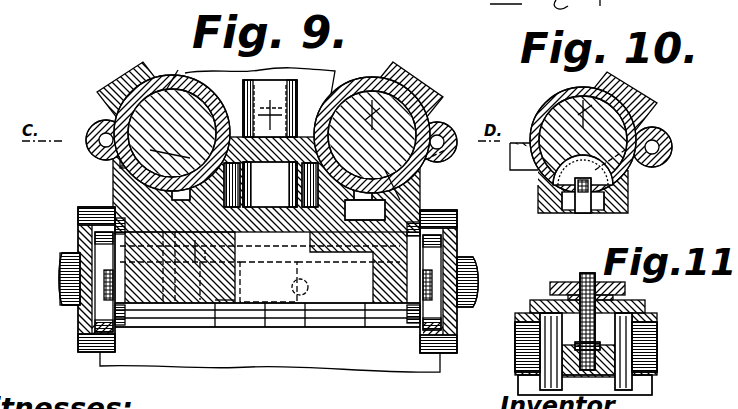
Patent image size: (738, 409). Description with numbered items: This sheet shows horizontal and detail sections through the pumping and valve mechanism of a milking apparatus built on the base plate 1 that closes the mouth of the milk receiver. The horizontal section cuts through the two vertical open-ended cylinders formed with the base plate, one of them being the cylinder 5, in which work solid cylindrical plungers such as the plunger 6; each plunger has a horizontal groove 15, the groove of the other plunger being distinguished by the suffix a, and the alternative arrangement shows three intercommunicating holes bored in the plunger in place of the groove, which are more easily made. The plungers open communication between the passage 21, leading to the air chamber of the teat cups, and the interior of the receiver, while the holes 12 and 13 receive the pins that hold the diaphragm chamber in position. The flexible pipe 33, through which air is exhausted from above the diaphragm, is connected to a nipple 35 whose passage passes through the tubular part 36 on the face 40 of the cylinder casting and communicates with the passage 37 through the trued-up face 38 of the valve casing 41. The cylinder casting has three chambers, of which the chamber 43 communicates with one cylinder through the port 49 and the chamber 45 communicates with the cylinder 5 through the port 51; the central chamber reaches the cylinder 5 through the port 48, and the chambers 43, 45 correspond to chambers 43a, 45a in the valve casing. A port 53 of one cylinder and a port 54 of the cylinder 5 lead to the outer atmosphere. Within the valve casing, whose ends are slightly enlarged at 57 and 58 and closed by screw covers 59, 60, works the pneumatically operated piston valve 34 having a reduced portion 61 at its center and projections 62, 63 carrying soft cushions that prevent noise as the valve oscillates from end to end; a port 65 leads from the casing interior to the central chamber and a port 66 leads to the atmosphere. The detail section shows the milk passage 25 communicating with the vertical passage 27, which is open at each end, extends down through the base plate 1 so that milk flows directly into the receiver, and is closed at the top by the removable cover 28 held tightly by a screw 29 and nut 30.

In FIG. 9, the base plate 1 is at (369, 230).
In FIG. 9, the cylinder 5 is at (362, 92).
In FIG. 10, the cylinder 5 is at (553, 102).
In FIG. 9, the plunger 6 is at (369, 230).
In FIG. 9, the bearing a is at (172, 72).
In FIG. 9, the hole 12 is at (100, 142).
In FIG. 9, the hole 13 is at (440, 140).
In FIG. 10, the hole 13 is at (660, 147).
In FIG. 9, the horizontal groove 15 is at (275, 151).
In FIG. 9, the passage 21 is at (130, 86).
In FIG. 10, the passage 21 is at (640, 102).
In FIG. 11, the milk passage 25 is at (645, 348).
In FIG. 11, the vertical passage 27 is at (640, 388).
In FIG. 11, the removable cover 28 is at (532, 304).
In FIG. 11, the screw 29 is at (586, 275).
In FIG. 11, the nut 30 is at (556, 290).
In FIG. 9, the flexible pipe 33 is at (265, 95).
In FIG. 9, the controlling valve 34 is at (215, 318).
In FIG. 9, the nipple 35 is at (292, 112).
In FIG. 9, the tubular part 36 is at (270, 184).
In FIG. 9, the passage 37 is at (260, 268).
In FIG. 9, the valve casing face 38 is at (80, 215).
In FIG. 9, the face of the cylinder casting 40 is at (400, 200).
In FIG. 10, the face of the cylinder casting 40 is at (620, 212).
In FIG. 9, the valve casing 41 is at (252, 328).
In FIG. 9, the chamber 43 is at (212, 212).
In FIG. 9, the chamber 43a is at (228, 306).
In FIG. 9, the chamber 45 is at (355, 218).
In FIG. 10, the chamber 45 is at (575, 207).
In FIG. 9, the chamber 45a is at (303, 292).
In FIG. 9, the port 48 is at (360, 124).
In FIG. 10, the port 48 is at (548, 182).
In FIG. 9, the port 49 is at (121, 170).
In FIG. 9, the port 51 is at (346, 192).
In FIG. 10, the port 51 is at (545, 202).
In FIG. 9, the port 53 is at (122, 167).
In FIG. 9, the port 54 is at (432, 165).
In FIG. 10, the port 54 is at (605, 175).
In FIG. 9, the enlarged end 57 is at (103, 296).
In FIG. 9, the enlarged end 58 is at (432, 312).
In FIG. 9, the screw cover 59 is at (88, 326).
In FIG. 9, the screw cover 60 is at (440, 332).
In FIG. 9, the reduced portion 61 is at (268, 318).
In FIG. 9, the projection 62 is at (105, 262).
In FIG. 9, the projection 63 is at (448, 262).
In FIG. 9, the port 65 is at (216, 266).
In FIG. 9, the port 66 is at (308, 322).